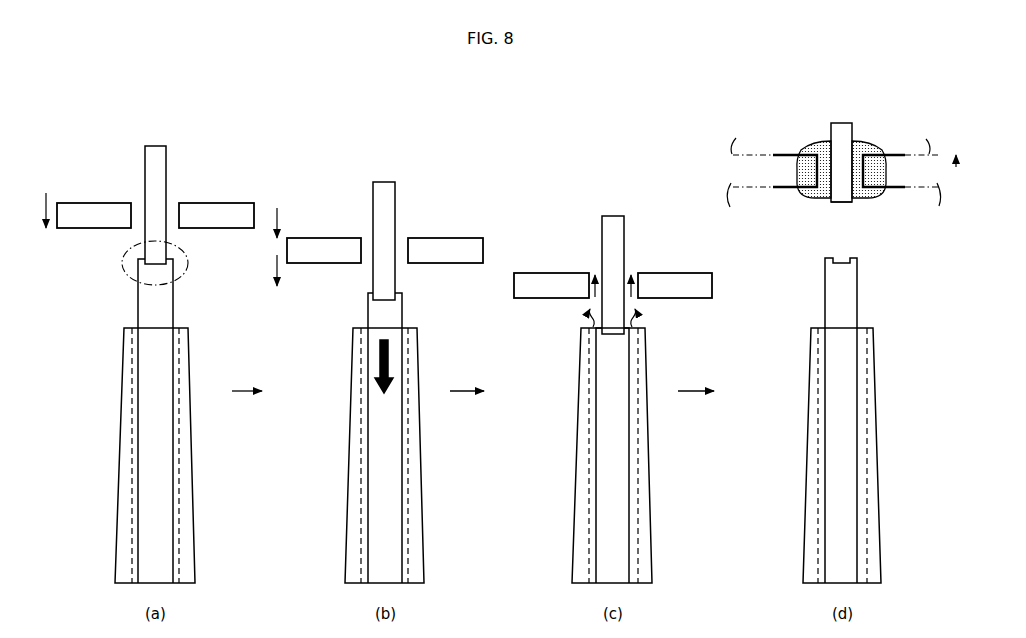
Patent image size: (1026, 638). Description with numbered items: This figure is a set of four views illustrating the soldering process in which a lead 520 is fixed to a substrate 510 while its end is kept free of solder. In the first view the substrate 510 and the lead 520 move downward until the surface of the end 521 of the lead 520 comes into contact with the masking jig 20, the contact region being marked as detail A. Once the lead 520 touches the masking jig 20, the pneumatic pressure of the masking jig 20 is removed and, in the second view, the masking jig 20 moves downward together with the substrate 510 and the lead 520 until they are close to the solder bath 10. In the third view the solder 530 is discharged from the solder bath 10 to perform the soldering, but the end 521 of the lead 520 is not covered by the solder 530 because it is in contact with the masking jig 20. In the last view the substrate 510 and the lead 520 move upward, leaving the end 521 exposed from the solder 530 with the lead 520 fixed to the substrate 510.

The solder bath 10 is at (122, 427).
The masking jig 20 is at (147, 302).
The substrate 510 is at (78, 234).
The lead 520 is at (130, 144).
The end of the lead 521 is at (842, 202).
The solder 530 is at (860, 148).
The detail region A is at (187, 255).